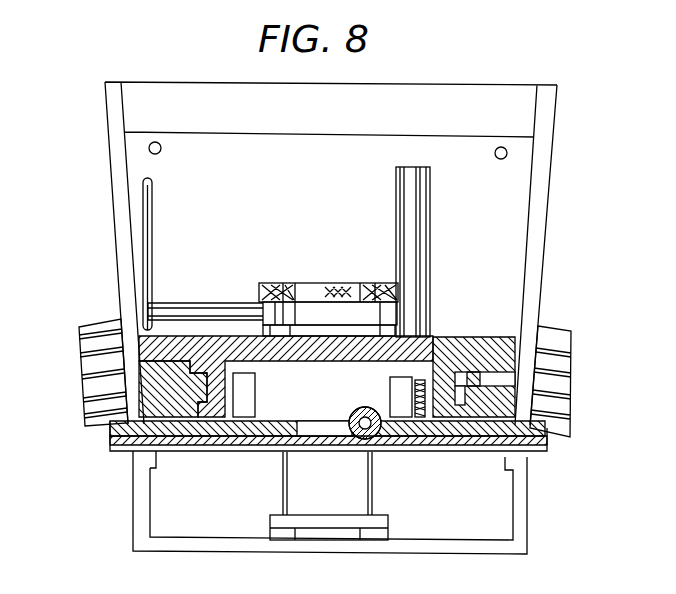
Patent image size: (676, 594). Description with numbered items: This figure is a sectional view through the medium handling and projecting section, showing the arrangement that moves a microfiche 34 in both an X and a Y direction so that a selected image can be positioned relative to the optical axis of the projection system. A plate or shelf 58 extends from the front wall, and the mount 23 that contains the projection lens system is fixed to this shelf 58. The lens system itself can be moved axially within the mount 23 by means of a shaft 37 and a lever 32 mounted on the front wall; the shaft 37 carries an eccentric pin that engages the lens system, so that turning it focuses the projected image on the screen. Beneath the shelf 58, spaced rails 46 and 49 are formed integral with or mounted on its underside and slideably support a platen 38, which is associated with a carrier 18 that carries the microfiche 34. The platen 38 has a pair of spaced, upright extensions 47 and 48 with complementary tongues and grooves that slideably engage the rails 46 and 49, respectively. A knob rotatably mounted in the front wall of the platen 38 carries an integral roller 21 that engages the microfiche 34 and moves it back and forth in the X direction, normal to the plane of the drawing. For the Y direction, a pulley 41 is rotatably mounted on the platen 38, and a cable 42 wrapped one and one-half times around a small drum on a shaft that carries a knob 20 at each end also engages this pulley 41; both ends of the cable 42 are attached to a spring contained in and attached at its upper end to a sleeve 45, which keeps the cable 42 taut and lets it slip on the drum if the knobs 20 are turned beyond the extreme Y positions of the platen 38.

The carrier 18 is at (183, 426).
The knob 20 is at (80, 327).
The roller 21 is at (352, 410).
The mount 23 is at (315, 284).
The lever 32 is at (151, 234).
The microfiche 34 is at (110, 441).
The shaft 37 is at (205, 296).
The platen 38 is at (248, 430).
The pulley 41 is at (391, 380).
The cable 42 is at (419, 437).
The sleeve 45 is at (405, 180).
The rail 46 is at (232, 394).
The upright extension 47 is at (195, 383).
The upright extension 48 is at (544, 462).
The rail 49 is at (476, 432).
The plate or shelf 58 is at (458, 340).